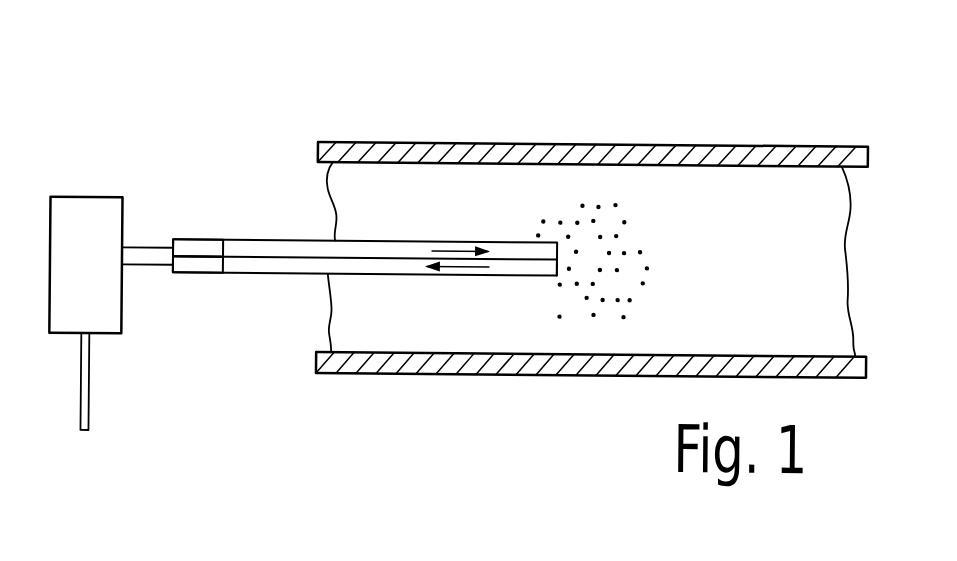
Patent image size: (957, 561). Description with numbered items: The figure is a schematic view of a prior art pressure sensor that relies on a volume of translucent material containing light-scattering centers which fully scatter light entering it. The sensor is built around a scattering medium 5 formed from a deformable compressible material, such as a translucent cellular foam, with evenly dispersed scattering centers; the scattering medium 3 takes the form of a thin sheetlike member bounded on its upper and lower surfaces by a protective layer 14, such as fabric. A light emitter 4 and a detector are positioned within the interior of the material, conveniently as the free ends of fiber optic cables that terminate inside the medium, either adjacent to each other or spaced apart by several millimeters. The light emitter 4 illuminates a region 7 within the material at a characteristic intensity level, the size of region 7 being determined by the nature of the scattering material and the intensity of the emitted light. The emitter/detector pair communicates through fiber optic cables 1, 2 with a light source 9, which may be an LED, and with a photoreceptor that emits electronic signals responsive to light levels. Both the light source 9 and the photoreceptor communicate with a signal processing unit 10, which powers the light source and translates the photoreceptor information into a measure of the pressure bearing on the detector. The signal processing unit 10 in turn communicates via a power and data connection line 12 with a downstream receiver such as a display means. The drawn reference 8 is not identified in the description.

The fiber optic cable 1 is at (258, 249).
The fiber optic cable 2 is at (259, 268).
The scattering medium 3 is at (796, 193).
The light emitter 4 is at (198, 249).
The scattering medium 5 is at (196, 268).
The region 7 is at (632, 297).
The probe tip 8 is at (539, 268).
The light source 9 is at (526, 247).
The signal processing unit 10 is at (85, 199).
The power and data connection line 12 is at (91, 382).
The protective layer 14 is at (438, 142).